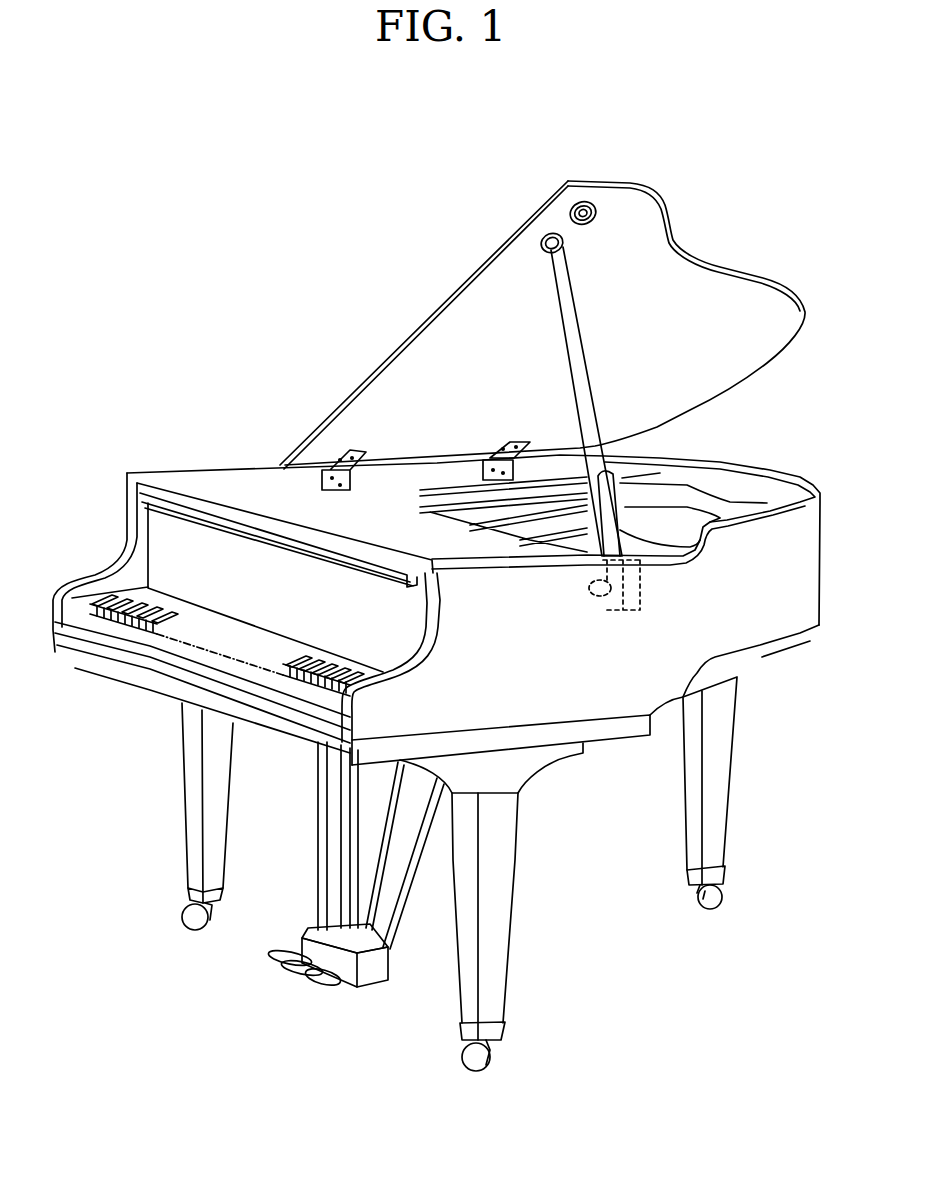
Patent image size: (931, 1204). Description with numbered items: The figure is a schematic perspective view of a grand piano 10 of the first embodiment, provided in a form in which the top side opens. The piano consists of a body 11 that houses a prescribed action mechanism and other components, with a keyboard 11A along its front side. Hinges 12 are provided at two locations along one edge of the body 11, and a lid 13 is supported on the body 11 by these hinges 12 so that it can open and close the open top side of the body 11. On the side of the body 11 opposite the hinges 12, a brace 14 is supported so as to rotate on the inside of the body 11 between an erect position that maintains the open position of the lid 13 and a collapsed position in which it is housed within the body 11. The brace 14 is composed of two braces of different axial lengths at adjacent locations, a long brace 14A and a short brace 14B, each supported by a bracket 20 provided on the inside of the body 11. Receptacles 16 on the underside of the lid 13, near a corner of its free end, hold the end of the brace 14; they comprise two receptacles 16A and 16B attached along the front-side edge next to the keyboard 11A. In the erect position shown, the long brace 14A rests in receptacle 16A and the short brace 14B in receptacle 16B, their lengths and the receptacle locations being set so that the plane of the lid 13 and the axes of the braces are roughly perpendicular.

The grand piano 10 is at (318, 282).
The body 11 is at (767, 477).
The keyboard 11A is at (112, 624).
The hinges 12 is at (350, 450).
The lid 13 is at (723, 277).
The brace 14 is at (667, 313).
The long brace 14A is at (573, 332).
The short brace 14B is at (598, 455).
The receptacles 16 is at (500, 119).
The receptacle 16A is at (541, 243).
The receptacle 16B is at (577, 200).
The brackets 20 is at (630, 622).